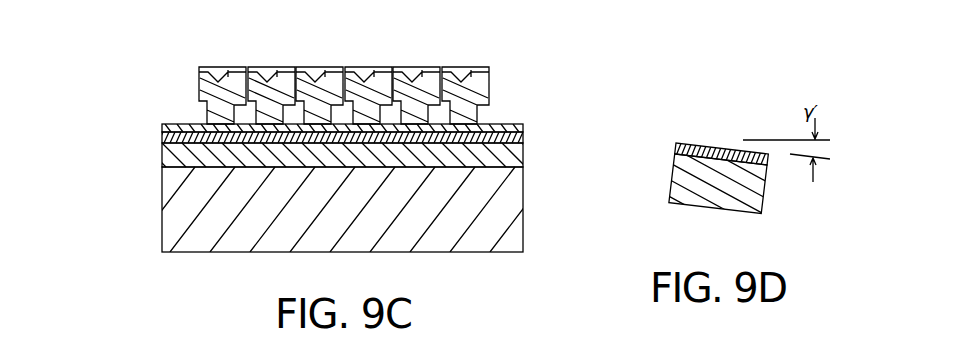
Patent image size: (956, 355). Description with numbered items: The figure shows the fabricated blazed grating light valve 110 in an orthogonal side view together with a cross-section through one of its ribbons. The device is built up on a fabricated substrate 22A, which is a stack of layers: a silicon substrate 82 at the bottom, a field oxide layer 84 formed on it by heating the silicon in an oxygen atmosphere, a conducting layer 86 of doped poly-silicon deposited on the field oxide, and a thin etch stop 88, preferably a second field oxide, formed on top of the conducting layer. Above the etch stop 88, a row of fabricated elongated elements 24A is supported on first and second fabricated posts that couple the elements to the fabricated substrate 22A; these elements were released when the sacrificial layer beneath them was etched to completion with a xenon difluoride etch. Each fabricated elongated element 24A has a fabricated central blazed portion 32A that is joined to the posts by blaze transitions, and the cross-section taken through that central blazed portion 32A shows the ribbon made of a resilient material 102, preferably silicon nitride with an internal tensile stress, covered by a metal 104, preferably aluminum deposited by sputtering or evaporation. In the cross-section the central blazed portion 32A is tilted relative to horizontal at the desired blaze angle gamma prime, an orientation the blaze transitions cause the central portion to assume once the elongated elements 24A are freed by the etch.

In FIG. 9C, the fabricated blazed grating light valve 110 is at (519, 61).
In FIG. 9C, the fabricated elongated elements 24A is at (199, 90).
In FIG. 9D, the fabricated elongated elements 24A is at (672, 103).
In FIG. 9C, the fabricated substrate 22A is at (583, 128).
In FIG. 9C, the etch stop 88 is at (161, 128).
In FIG. 9C, the conducting layer 86 is at (523, 138).
In FIG. 9C, the field oxide layer 84 is at (161, 155).
In FIG. 9C, the silicon substrate 82 is at (523, 215).
In FIG. 9D, the fabricated central blazed portion 32A is at (718, 92).
In FIG. 9D, the metal 104 is at (685, 141).
In FIG. 9D, the resilient material 102 is at (762, 186).